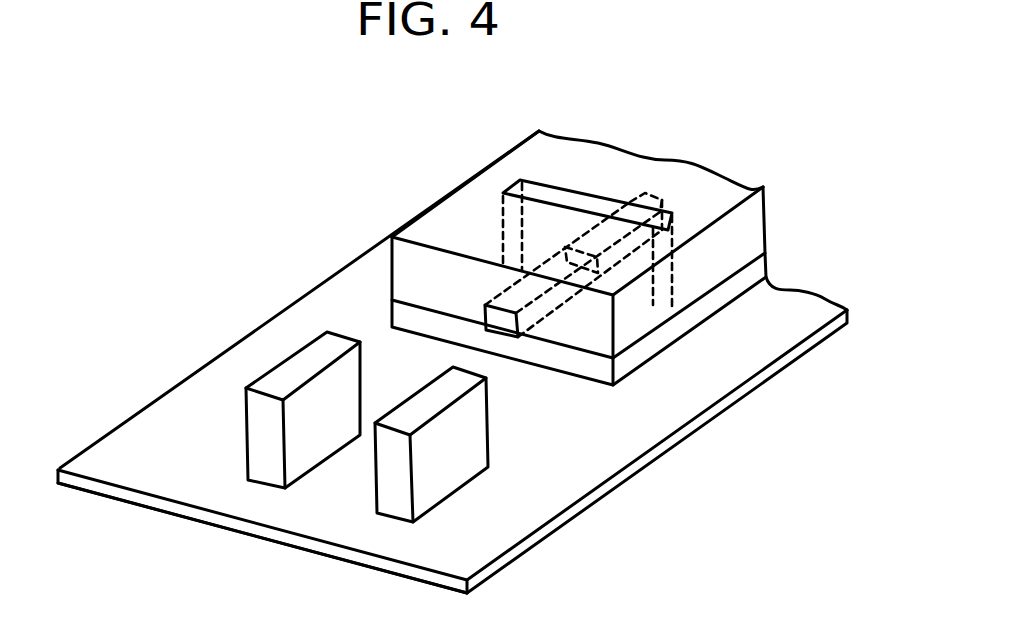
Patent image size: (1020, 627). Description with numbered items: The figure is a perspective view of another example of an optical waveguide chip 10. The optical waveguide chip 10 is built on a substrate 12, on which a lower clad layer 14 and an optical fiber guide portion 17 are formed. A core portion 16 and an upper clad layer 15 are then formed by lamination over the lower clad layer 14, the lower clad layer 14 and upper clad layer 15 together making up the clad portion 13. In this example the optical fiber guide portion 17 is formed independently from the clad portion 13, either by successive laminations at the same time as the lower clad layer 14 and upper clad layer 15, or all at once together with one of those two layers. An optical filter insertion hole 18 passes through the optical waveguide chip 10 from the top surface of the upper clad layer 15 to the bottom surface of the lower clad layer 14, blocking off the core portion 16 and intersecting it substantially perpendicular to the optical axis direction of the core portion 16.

The optical waveguide chip 10 is at (668, 512).
The substrate 12 is at (717, 413).
The clad portion 13 is at (640, 256).
The lower clad layer 14 is at (757, 272).
The upper clad layer 15 is at (753, 227).
The core portion 16 is at (657, 198).
The optical fiber guide portion 17 is at (295, 373).
The optical filter insertion hole 18 is at (560, 198).